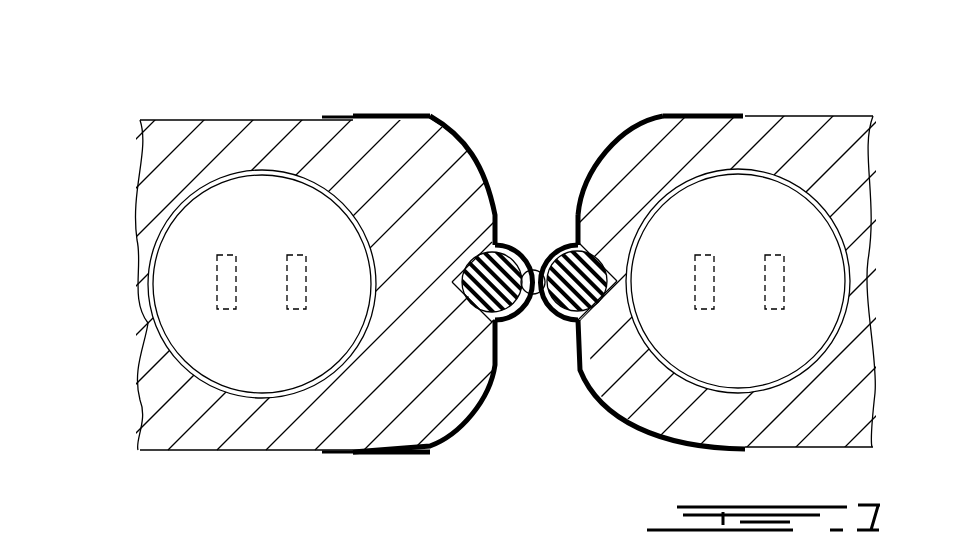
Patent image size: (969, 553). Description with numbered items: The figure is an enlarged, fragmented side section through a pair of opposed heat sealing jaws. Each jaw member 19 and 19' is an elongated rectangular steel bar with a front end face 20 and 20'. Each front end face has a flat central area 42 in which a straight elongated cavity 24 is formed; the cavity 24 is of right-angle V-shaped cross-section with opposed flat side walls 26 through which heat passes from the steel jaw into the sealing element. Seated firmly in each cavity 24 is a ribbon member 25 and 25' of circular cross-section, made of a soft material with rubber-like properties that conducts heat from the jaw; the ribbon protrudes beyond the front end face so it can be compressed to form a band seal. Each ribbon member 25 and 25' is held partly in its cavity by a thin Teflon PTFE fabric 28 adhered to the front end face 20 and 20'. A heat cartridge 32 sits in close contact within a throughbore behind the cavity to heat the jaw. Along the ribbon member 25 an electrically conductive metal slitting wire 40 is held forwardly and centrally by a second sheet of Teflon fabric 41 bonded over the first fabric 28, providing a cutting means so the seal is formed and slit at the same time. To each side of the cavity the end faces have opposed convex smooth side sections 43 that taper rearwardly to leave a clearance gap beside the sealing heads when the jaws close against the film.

The jaw member 19 is at (430, 244).
The jaw member 19' is at (660, 243).
The front end face 20 is at (462, 137).
The front end face 20' is at (649, 93).
The cavity 24 is at (512, 313).
The ribbon member 25 is at (499, 244).
The ribbon member 25' is at (573, 335).
The side walls 26 is at (463, 276).
The Teflon fabric 28 is at (328, 115).
The heat cartridge 32 is at (228, 242).
The slitting wire 40 is at (533, 295).
The second sheet of Teflon fabric 41 is at (378, 113).
The flat central area 42 is at (447, 132).
The convex smooth side sections 43 is at (587, 215).